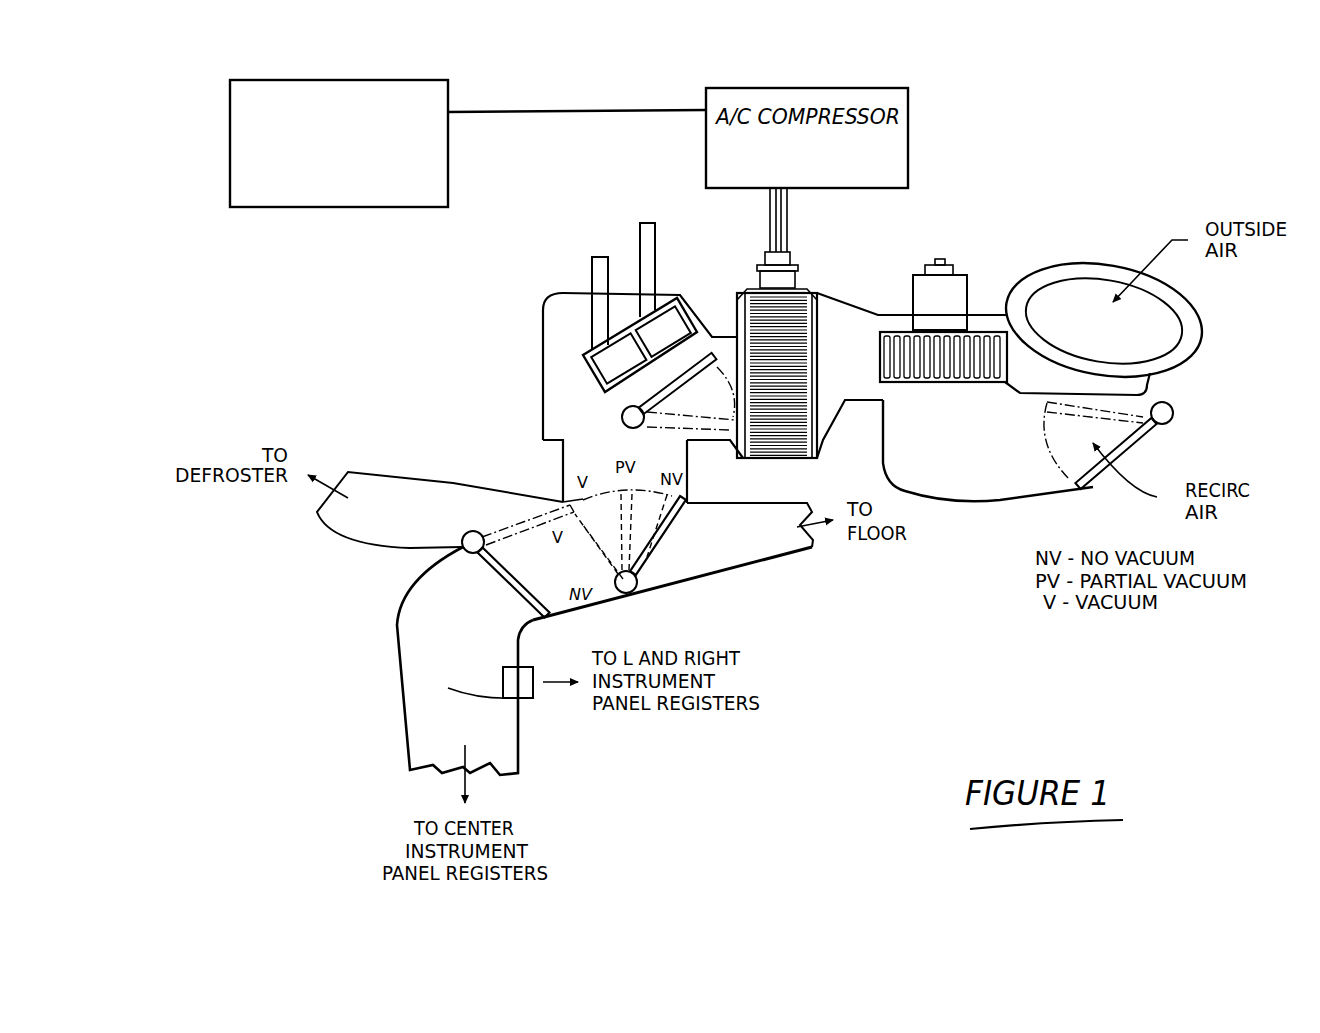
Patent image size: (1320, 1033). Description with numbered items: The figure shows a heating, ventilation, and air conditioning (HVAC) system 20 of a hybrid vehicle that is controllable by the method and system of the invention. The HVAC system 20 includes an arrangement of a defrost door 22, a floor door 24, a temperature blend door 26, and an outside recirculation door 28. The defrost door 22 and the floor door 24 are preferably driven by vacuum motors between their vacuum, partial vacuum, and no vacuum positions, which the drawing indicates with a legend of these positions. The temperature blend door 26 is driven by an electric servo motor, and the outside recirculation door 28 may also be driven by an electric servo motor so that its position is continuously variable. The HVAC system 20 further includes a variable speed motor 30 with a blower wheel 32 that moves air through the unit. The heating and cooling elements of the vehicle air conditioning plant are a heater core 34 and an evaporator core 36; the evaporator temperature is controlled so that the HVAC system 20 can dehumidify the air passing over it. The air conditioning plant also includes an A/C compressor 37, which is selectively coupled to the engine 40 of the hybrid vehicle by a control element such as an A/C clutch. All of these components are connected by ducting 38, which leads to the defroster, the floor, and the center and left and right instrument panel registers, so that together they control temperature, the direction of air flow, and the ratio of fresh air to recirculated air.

The HVAC system 20 is at (1053, 240).
The defrost door 22 is at (500, 577).
The floor door 24 is at (653, 553).
The temperature blend door 26 is at (640, 393).
The outside recirculation door 28 is at (1140, 452).
The variable speed motor 30 is at (910, 303).
The blower wheel 32 is at (988, 333).
The heater core 34 is at (592, 377).
The evaporator core 36 is at (820, 335).
The A/C compressor 37 is at (700, 144).
The ducting 38 is at (967, 507).
The engine 40 is at (397, 83).